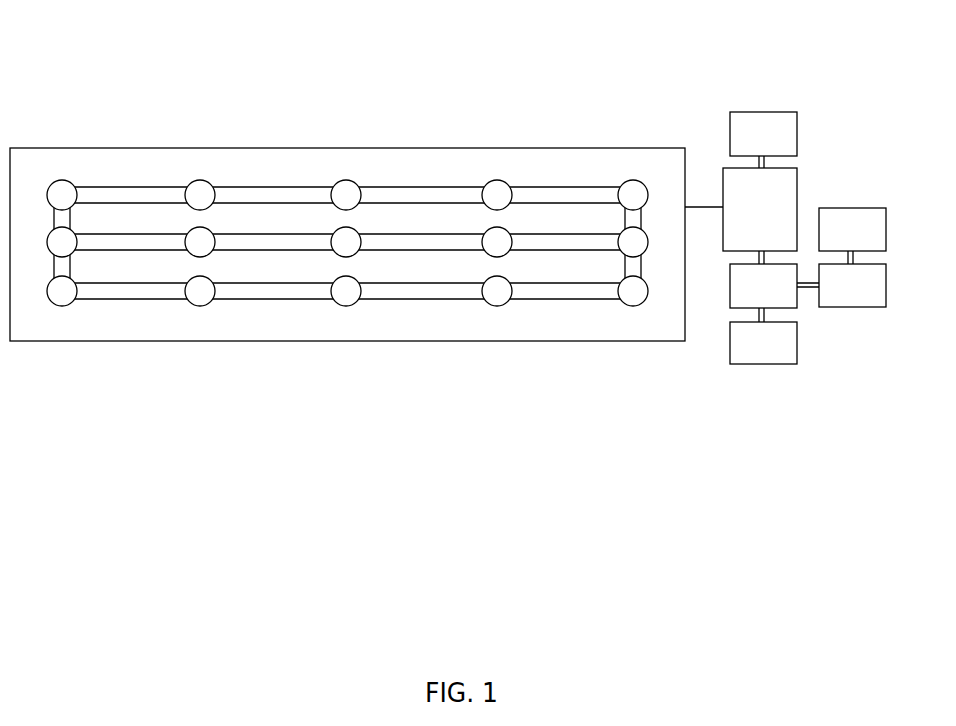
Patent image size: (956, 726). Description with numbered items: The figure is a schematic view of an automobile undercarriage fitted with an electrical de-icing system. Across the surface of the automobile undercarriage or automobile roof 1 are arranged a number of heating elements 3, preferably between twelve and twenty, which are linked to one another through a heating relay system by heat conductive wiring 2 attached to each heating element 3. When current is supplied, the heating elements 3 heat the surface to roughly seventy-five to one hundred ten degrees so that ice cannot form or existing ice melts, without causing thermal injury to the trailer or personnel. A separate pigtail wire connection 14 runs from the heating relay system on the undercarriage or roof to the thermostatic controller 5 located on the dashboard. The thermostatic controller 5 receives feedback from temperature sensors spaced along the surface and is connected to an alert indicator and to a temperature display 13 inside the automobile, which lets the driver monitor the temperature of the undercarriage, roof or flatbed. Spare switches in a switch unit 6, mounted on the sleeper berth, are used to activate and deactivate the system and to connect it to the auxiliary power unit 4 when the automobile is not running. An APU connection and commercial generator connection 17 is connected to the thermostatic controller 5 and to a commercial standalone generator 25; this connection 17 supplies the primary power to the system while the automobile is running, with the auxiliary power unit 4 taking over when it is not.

The automobile undercarriage or automobile roof 1 is at (75, 148).
The heat conductive wiring 2 is at (143, 188).
The heating element 3 is at (346, 195).
The auxiliary power unit 4 is at (766, 135).
The thermostatic controller 5 is at (750, 288).
The switch unit 6 is at (762, 210).
The temperature display 13 is at (766, 340).
The pigtail wire connection 14 is at (706, 205).
The APU connection and commercial generator connection 17 is at (856, 283).
The commercial standalone generator 25 is at (856, 226).